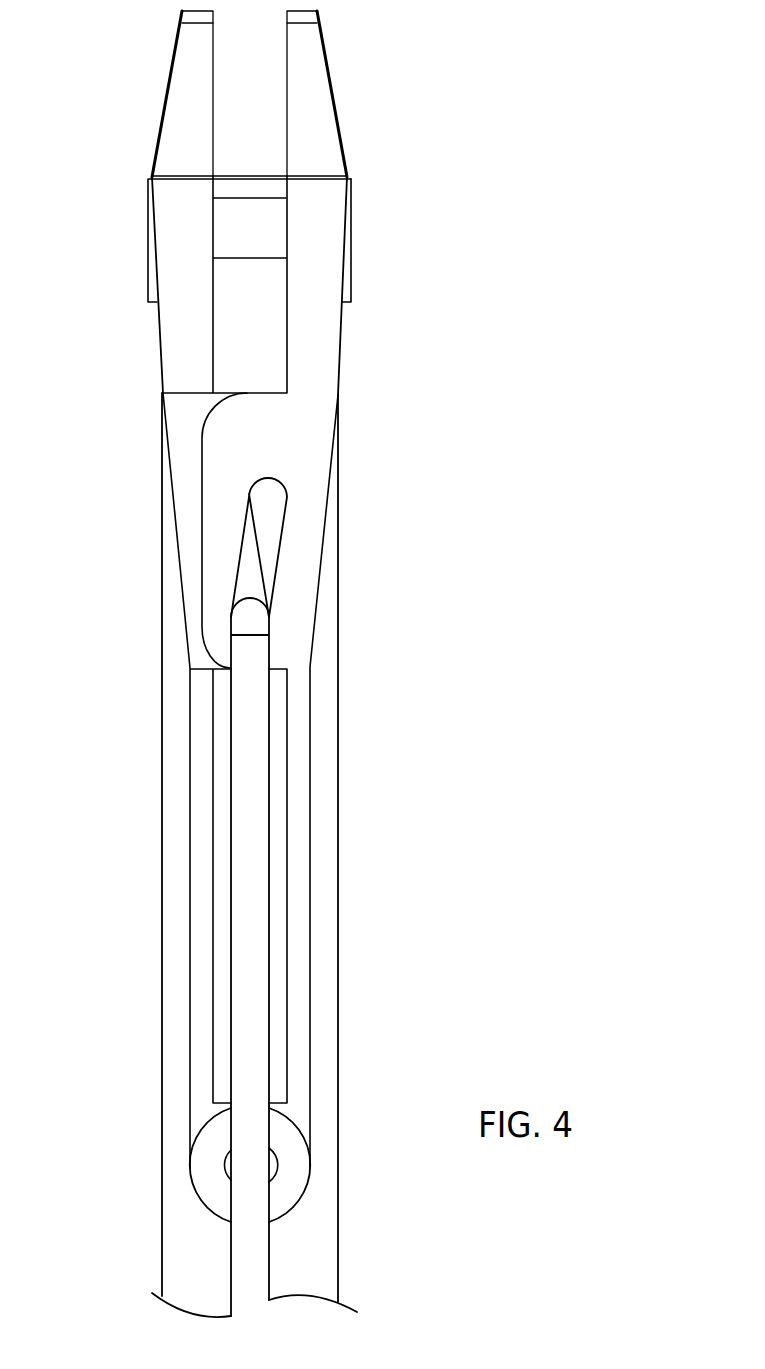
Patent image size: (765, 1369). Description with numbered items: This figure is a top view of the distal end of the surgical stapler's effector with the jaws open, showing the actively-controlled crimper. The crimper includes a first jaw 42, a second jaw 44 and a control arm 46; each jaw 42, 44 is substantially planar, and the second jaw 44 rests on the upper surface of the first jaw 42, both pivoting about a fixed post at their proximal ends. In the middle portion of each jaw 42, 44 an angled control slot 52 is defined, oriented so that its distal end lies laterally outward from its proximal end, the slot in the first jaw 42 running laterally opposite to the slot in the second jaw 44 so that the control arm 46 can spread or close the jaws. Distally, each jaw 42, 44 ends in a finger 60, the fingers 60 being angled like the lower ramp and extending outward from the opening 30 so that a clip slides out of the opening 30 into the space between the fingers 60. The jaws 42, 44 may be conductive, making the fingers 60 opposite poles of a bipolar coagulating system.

The opening 30 is at (257, 222).
The first jaw 42 is at (155, 348).
The second jaw 44 is at (347, 388).
The control arm 46 is at (270, 847).
The control slot 52 is at (285, 517).
The finger 60 is at (167, 102).